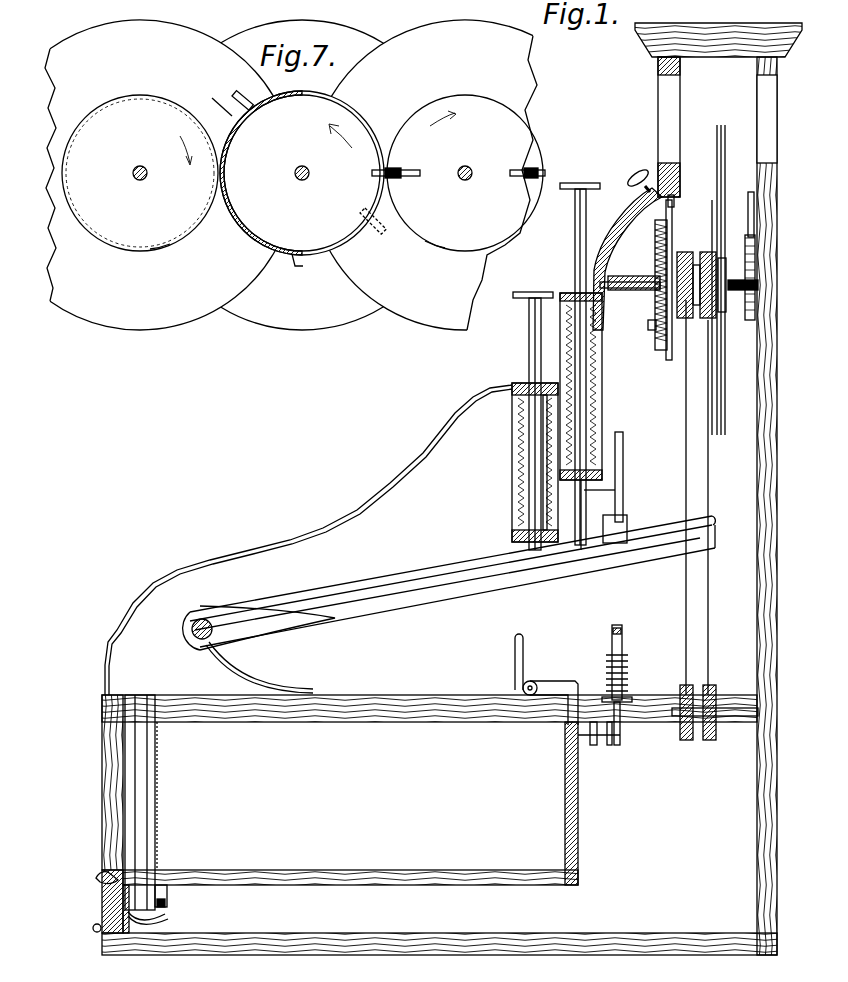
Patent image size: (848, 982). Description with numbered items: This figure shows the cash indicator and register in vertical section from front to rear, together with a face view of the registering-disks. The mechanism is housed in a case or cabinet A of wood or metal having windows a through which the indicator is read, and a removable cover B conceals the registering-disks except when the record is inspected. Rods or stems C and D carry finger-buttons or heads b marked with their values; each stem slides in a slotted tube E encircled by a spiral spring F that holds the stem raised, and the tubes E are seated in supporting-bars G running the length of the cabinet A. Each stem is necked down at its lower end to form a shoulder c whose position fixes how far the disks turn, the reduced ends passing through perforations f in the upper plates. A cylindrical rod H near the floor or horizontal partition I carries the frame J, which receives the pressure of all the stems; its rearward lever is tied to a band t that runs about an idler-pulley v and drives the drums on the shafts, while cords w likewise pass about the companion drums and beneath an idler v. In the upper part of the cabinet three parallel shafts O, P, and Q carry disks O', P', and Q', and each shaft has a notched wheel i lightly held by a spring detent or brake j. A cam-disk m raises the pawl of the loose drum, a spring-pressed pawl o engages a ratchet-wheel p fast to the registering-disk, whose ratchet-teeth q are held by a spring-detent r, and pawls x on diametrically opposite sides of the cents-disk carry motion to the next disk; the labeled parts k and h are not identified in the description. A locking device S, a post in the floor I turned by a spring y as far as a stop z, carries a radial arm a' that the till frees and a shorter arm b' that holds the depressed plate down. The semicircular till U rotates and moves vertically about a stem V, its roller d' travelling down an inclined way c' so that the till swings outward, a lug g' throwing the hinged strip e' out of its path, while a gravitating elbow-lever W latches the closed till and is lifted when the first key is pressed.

In FIG. 7, the shaft P is at (140, 173).
In FIG. 7, the shaft O is at (302, 173).
In FIG. 7, the shaft Q is at (465, 173).
In FIG. 7, the disk P' is at (160, 187).
In FIG. 1, the disk P' is at (733, 280).
In FIG. 7, the disk O' is at (302, 183).
In FIG. 1, the disk O' is at (706, 302).
In FIG. 7, the disk Q' is at (434, 186).
In FIG. 7, the ratchet-teeth q is at (300, 268).
In FIG. 1, the ratchet-teeth q is at (655, 345).
In FIG. 7, the pawls x is at (225, 106).
In FIG. 1, the case or cabinet A is at (780, 535).
In FIG. 1, the windows or openings a is at (718, 127).
In FIG. 1, the floor or horizontal partition I is at (452, 696).
In FIG. 1, the till U is at (297, 871).
In FIG. 1, the cylindrical stem or support V is at (150, 770).
In FIG. 1, the hinged strip or bar e' is at (97, 901).
In FIG. 1, the pin or lug g' is at (95, 872).
In FIG. 1, the perforations f is at (93, 928).
In FIG. 1, the anti-friction roller d' is at (175, 895).
In FIG. 1, the inclined way or bearing c' is at (159, 909).
In FIG. 1, the cord or band w is at (686, 418).
In FIG. 1, the band or cord t is at (709, 488).
In FIG. 1, the removable cover B is at (630, 198).
In FIG. 1, the spring-pressed pawl o is at (630, 276).
In FIG. 1, the spring-detent r is at (675, 205).
In FIG. 1, the ratchet-wheel p is at (670, 320).
In FIG. 1, the cam-disk m is at (697, 305).
In FIG. 1, the gear k is at (708, 252).
In FIG. 1, the notched or fluted wheel i is at (750, 320).
In FIG. 1, the spring detent or brake j is at (748, 232).
In FIG. 1, the finger-buttons or heads b is at (556, 231).
In FIG. 1, the rods or stems C is at (575, 240).
In FIG. 1, the rods or stems D is at (529, 330).
In FIG. 1, the tubes E is at (600, 385).
In FIG. 1, the spiral spring F is at (512, 485).
In FIG. 1, the supporting-bars G is at (512, 384).
In FIG. 1, the shoulder c is at (569, 515).
In FIG. 1, the arm h is at (600, 492).
In FIG. 1, the frame J is at (330, 648).
In FIG. 1, the cylindrical rod or stem H is at (190, 628).
In FIG. 1, the gravitating elbow-lever W is at (524, 665).
In FIG. 1, the locking device S is at (622, 630).
In FIG. 1, the shorter arm b' is at (605, 623).
In FIG. 1, the spring y is at (628, 680).
In FIG. 1, the radial arm a' is at (613, 748).
In FIG. 1, the stop z is at (593, 745).
In FIG. 1, the idler-pulley v is at (680, 686).